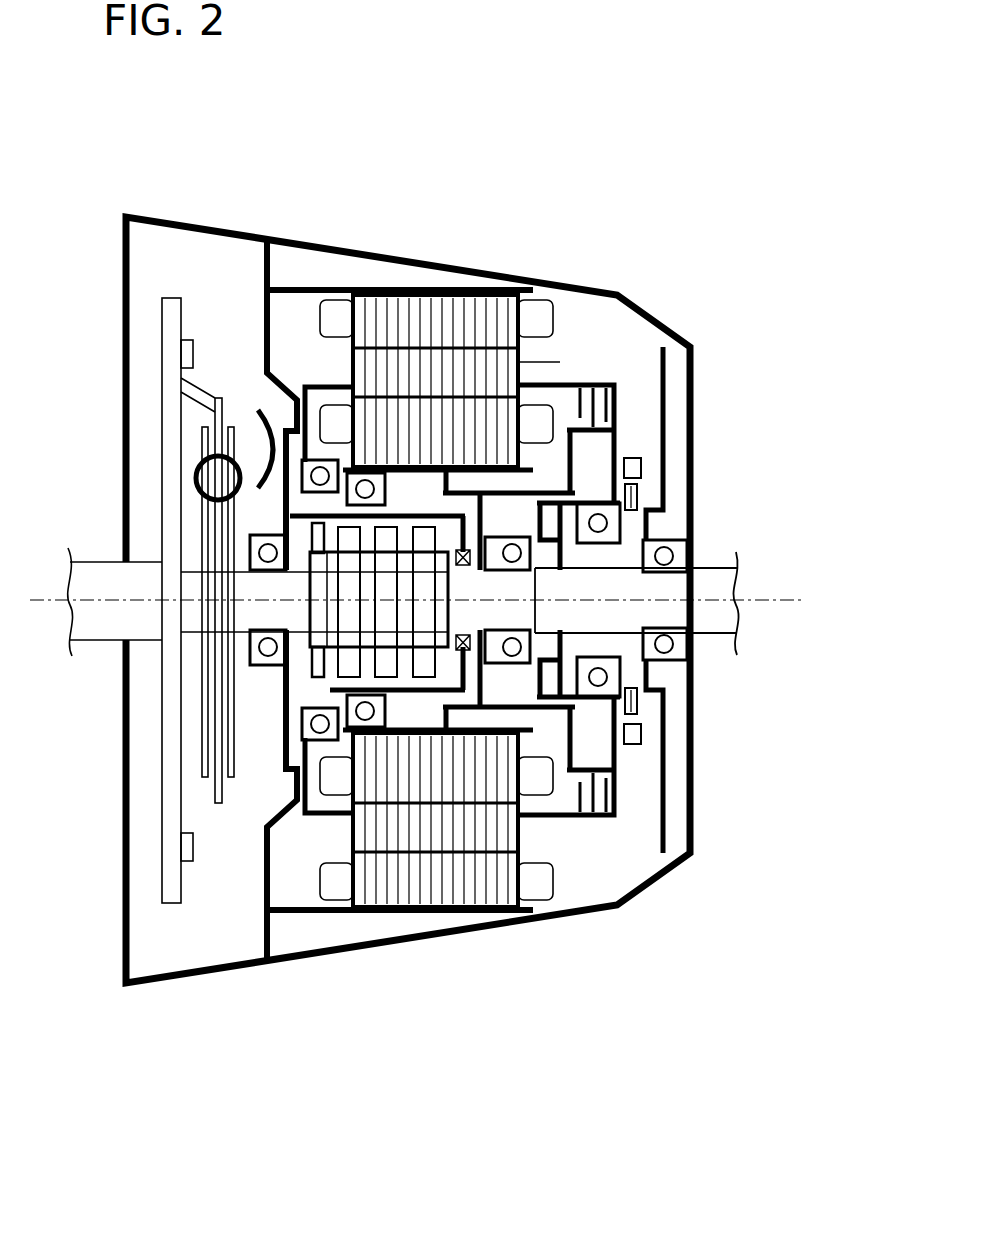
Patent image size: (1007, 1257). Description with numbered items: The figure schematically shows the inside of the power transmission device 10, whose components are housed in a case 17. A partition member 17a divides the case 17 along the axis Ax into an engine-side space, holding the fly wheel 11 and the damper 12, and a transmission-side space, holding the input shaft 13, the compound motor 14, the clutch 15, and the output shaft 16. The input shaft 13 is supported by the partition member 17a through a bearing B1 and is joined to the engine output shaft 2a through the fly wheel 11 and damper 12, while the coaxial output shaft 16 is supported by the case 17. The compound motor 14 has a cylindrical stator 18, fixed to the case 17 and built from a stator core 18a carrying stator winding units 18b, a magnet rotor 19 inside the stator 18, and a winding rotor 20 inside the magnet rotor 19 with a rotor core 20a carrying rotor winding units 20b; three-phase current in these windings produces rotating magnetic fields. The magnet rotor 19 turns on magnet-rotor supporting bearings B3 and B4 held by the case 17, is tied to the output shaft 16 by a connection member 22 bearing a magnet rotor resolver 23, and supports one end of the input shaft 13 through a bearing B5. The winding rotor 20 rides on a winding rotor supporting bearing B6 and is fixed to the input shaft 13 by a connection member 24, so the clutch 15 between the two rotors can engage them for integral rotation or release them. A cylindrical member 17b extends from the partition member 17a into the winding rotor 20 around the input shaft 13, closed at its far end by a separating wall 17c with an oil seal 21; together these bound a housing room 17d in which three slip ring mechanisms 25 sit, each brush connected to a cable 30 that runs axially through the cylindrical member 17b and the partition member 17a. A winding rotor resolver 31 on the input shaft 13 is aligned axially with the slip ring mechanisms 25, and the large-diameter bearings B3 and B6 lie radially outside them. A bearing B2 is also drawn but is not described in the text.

The power transmission device 10 is at (460, 108).
The fly wheel 11 is at (165, 808).
The damper 12 is at (210, 728).
The input shaft 13 is at (285, 668).
The compound motor 14 is at (436, 928).
The clutch 15 is at (626, 368).
The output shaft 16 is at (710, 578).
The case 17 is at (127, 986).
The partition member 17a is at (267, 264).
The cylindrical member 17b is at (362, 913).
The separating wall 17c is at (642, 700).
The housing room 17d is at (272, 548).
The stator 18 is at (428, 310).
The stator core 18a is at (485, 320).
The stator winding units 18b is at (540, 320).
The magnet rotor 19 is at (522, 368).
The winding rotor 20 is at (362, 742).
The rotor core 20a is at (667, 378).
The rotor winding units 20b is at (556, 395).
The oil seal 21 is at (638, 490).
The connection member 22 is at (616, 412).
The magnet rotor resolver 23 is at (656, 720).
The connection member 24 is at (640, 464).
The slip ring mechanisms 25 is at (349, 694).
The cable 30 is at (258, 432).
The winding rotor resolver 31 is at (314, 680).
The output shaft 2a is at (96, 560).
The axis Ax is at (770, 598).
The bearing B1 is at (255, 643).
The bearing B2 is at (606, 522).
The magnet-rotor supporting bearing B3 is at (312, 462).
The magnet-rotor supporting bearing B4 is at (606, 678).
The bearing B5 is at (742, 628).
The winding rotor supporting bearing B6 is at (386, 492).